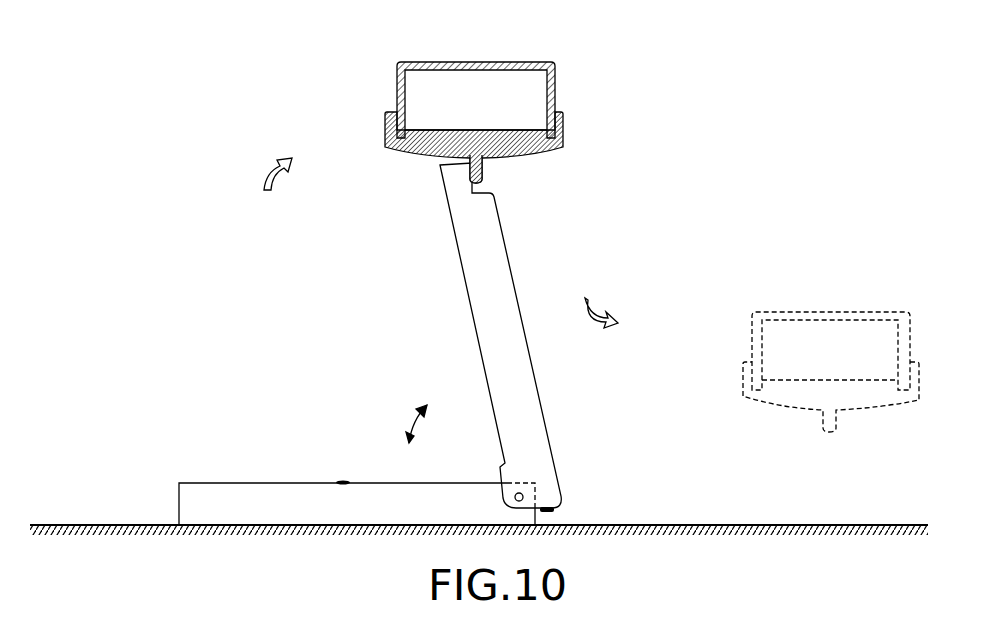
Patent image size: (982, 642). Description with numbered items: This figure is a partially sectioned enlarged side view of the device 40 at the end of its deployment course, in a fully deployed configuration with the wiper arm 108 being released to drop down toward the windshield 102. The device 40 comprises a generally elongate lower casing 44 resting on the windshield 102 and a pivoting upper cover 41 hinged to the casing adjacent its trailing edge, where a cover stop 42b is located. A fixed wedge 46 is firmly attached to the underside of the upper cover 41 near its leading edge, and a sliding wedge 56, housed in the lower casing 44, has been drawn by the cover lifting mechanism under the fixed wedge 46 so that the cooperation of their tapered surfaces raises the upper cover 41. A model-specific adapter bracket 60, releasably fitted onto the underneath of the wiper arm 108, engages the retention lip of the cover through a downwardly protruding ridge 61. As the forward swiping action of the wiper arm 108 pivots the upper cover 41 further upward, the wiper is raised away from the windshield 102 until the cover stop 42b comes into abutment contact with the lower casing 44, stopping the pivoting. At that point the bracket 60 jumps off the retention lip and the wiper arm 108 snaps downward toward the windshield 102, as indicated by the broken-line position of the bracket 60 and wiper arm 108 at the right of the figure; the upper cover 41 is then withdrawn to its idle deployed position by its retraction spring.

The device 40 is at (680, 196).
The upper cover 41 is at (537, 418).
The cover stop 42b is at (553, 512).
The lower casing 44 is at (268, 495).
The fixed wedge 46 is at (478, 337).
The sliding wedge 56 is at (343, 481).
The model-specific adapter bracket 60 is at (387, 148).
The downwardly protruding ridge 61 is at (482, 173).
The windshield 102 is at (713, 525).
The wiper arm 108 is at (427, 62).